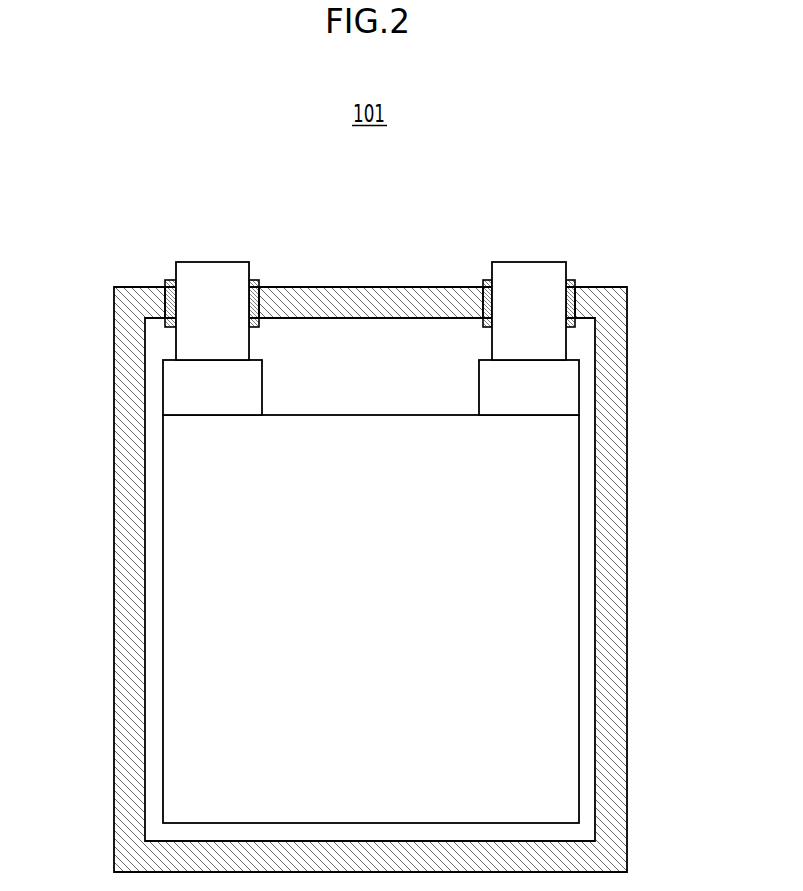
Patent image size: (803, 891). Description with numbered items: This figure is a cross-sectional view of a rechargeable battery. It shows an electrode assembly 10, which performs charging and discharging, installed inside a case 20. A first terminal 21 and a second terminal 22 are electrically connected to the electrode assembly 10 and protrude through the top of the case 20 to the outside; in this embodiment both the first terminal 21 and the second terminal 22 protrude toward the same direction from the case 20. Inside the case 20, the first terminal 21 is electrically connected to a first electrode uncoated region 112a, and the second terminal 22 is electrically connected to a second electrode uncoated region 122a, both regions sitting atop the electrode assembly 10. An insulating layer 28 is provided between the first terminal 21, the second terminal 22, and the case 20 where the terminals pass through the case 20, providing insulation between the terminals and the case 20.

The electrode assembly 10 is at (389, 405).
The case 20 is at (610, 570).
The first terminal 21 is at (210, 275).
The second terminal 22 is at (530, 277).
The insulating layer 28 is at (253, 287).
The first electrode uncoated region 112a is at (175, 396).
The second electrode uncoated region 122a is at (560, 390).